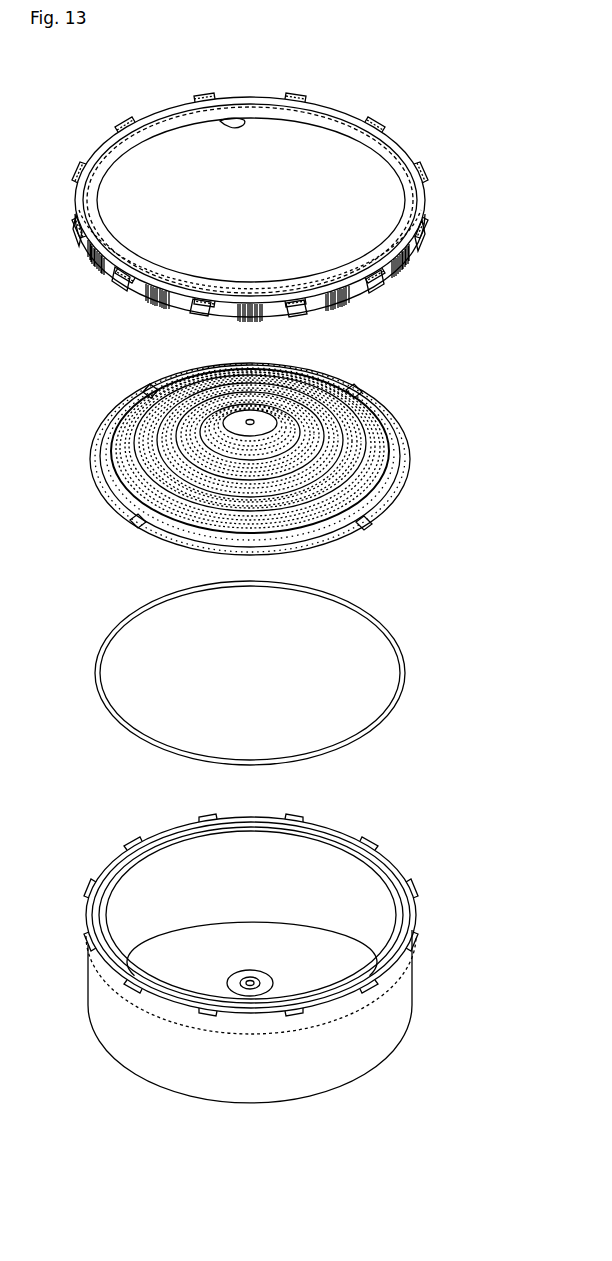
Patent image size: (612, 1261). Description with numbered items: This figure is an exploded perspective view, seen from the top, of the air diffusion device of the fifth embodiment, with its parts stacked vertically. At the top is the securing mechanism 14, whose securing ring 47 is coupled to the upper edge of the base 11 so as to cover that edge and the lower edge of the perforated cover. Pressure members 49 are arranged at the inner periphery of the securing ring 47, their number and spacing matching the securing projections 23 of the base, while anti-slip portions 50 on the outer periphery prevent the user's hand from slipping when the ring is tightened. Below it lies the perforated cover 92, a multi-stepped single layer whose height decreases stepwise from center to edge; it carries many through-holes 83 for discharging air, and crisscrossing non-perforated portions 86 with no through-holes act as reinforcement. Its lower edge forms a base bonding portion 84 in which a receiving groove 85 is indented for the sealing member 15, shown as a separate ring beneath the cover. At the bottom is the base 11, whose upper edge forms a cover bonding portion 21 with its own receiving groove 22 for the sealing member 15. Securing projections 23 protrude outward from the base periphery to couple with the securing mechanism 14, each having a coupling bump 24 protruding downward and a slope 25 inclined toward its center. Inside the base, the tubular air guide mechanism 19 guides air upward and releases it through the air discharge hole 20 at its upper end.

The base 11 is at (281, 958).
The securing mechanism 14 is at (279, 194).
The sealing member 15 is at (406, 674).
The air guide mechanism 19 is at (229, 967).
The air discharge hole 20 is at (254, 978).
The cover bonding portion 21 is at (394, 866).
The receiving groove 22 is at (410, 912).
The securing projections 23 is at (414, 938).
The coupling bump 24 is at (366, 987).
The slope 25 is at (398, 968).
The securing ring 47 is at (348, 126).
The pressure members 49 is at (234, 124).
The anti-slip portions 50 is at (412, 249).
The through-holes 83 is at (394, 467).
The base bonding portion 84 is at (412, 452).
The receiving groove 85 is at (144, 395).
The non-perforated portion 86 is at (352, 392).
The sieve plate assembly 92 is at (279, 465).